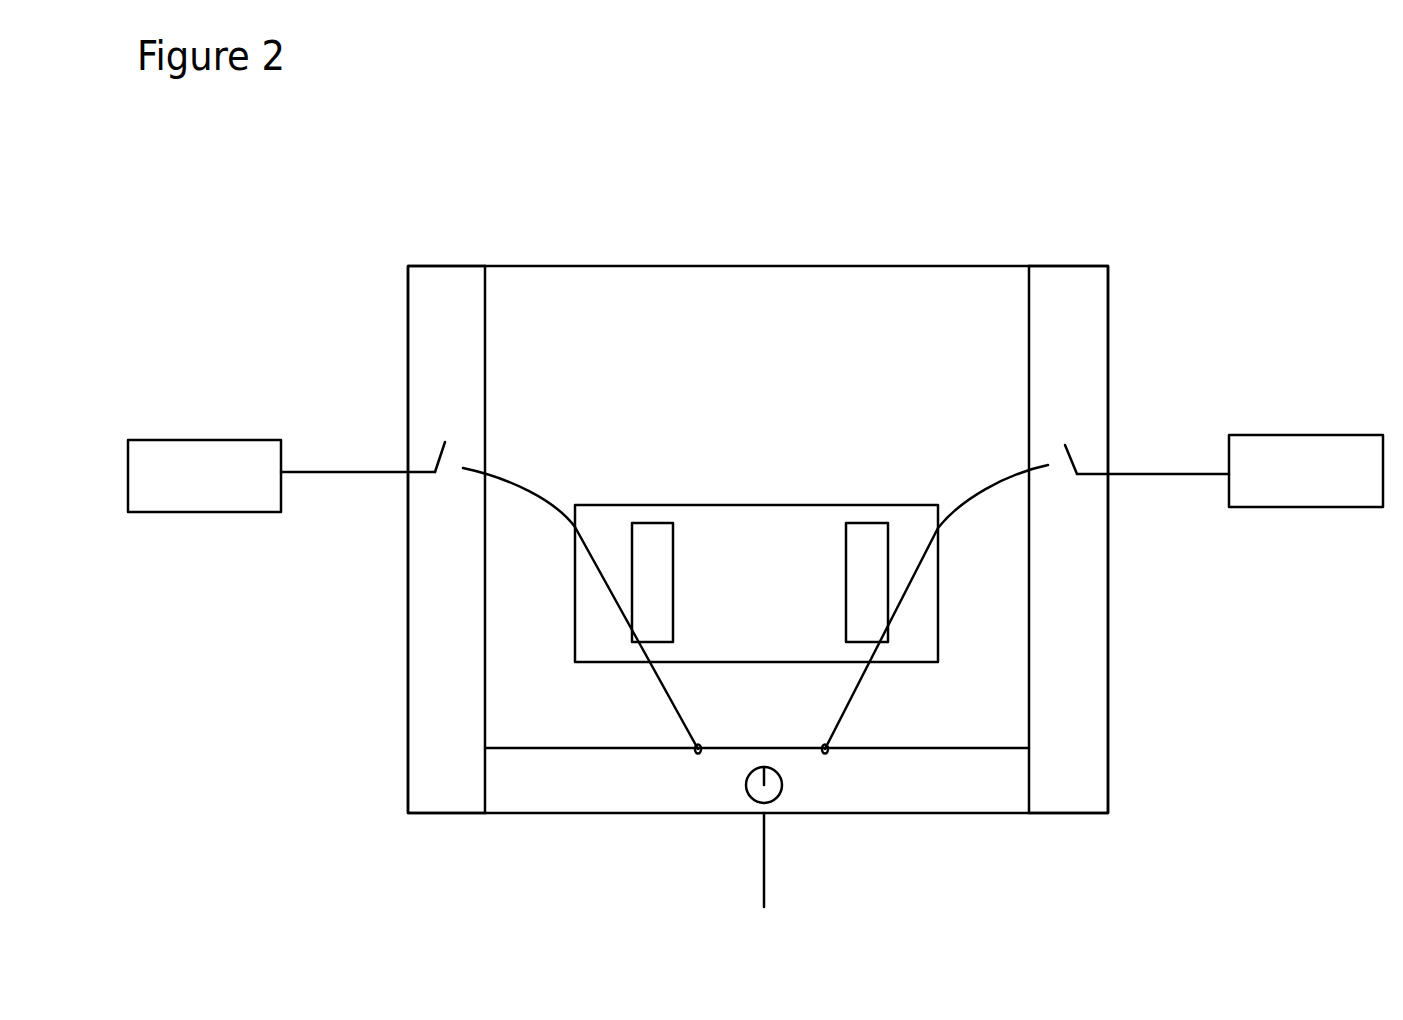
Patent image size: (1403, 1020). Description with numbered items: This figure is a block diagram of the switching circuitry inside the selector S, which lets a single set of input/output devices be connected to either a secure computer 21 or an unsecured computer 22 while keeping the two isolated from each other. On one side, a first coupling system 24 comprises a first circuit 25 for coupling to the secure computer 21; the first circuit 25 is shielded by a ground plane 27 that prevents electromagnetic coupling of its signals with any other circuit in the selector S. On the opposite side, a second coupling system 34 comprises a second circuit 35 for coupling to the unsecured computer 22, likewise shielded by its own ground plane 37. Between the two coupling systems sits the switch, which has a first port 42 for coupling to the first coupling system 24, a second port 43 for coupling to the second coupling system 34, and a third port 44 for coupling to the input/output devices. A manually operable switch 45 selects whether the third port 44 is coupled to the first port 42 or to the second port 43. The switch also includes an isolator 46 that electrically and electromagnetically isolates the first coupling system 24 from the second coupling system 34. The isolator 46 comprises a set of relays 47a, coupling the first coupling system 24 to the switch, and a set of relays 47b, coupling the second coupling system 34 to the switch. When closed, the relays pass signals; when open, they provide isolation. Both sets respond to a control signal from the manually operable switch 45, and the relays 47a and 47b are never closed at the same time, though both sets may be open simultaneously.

The secure computer 21 is at (198, 512).
The unsecured computer 22 is at (1306, 507).
The first coupling system 24 is at (448, 813).
The first circuit 25 is at (445, 443).
The ground plane 27 is at (485, 306).
The second coupling system 34 is at (1063, 815).
The second circuit 35 is at (1068, 448).
The ground plane 37 is at (1029, 313).
The first port 42 is at (694, 755).
The second port 43 is at (829, 755).
The third port 44 is at (764, 848).
The manually operable switch 45 is at (777, 799).
The isolator 46 is at (617, 661).
The set of relays 47a is at (675, 540).
The set of relays 47b is at (845, 540).
The selector S is at (1108, 582).